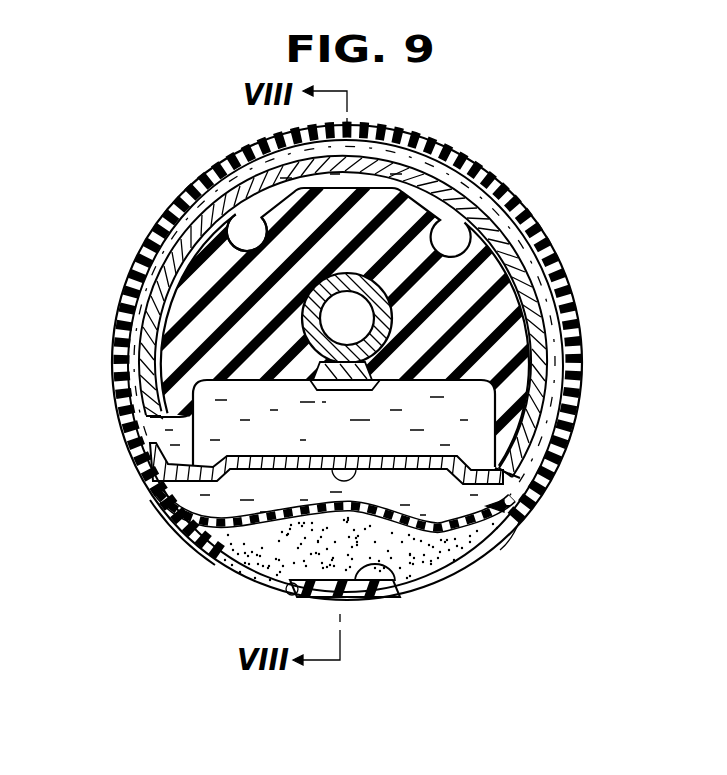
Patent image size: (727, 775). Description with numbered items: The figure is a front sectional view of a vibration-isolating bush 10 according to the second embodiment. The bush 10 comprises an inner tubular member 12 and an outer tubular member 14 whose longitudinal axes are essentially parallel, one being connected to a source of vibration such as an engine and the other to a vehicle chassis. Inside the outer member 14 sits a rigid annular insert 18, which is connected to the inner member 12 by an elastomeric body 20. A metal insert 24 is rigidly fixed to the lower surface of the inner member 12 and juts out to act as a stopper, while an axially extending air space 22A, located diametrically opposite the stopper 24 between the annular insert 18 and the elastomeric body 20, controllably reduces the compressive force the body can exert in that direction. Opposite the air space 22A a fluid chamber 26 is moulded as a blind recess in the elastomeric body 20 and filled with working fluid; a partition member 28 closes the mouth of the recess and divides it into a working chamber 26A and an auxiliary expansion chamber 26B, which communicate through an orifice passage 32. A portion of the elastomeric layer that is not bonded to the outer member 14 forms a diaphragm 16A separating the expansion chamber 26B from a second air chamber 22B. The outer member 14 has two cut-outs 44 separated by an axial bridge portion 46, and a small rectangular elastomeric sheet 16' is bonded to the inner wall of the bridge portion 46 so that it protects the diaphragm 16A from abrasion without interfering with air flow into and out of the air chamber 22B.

The bush 10 is at (485, 158).
The inner tubular member 12 is at (301, 350).
The outer tubular member 14 is at (566, 262).
The elastomeric sheet 16' is at (397, 597).
The diaphragm 16A is at (470, 562).
The annular insert 18 is at (218, 214).
The elastomeric body 20 is at (178, 318).
The air space 22A is at (246, 218).
The second air chamber 22B is at (268, 567).
The metal insert 24 is at (384, 378).
The fluid chamber 26 is at (513, 520).
The working chamber 26A is at (360, 449).
The auxiliary expansion chamber 26B is at (447, 502).
The partition member 28 is at (291, 456).
The orifice passage 32 is at (517, 222).
The cut-outs 44 is at (212, 557).
The bridge portion 46 is at (318, 592).